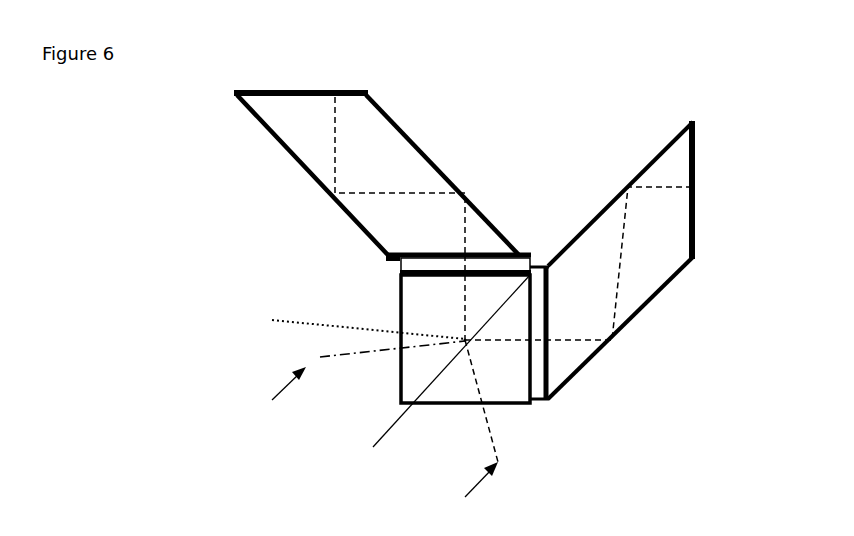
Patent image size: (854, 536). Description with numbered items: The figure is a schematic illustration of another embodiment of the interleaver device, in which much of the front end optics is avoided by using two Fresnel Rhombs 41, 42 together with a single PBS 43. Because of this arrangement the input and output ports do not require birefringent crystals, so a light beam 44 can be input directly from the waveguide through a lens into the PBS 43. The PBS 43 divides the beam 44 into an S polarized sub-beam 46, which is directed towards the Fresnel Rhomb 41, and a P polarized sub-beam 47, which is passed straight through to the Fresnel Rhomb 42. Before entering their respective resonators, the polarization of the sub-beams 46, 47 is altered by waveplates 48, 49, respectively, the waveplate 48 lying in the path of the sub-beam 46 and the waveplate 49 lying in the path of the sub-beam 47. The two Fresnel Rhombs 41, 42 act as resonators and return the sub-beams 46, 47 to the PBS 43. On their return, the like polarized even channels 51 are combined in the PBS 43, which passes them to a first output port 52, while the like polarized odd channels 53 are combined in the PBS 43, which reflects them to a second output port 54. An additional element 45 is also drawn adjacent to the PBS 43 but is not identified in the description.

The first wing panel 41 is at (303, 128).
The second wing panel 42 is at (660, 172).
The body 43 is at (439, 377).
The line of sight 44 is at (352, 325).
The upper plate 45 is at (465, 265).
The fold line of first wing 46 is at (432, 193).
The fold line of second wing 47 is at (627, 253).
The hinge 48 is at (549, 400).
The pivot point 49 is at (531, 273).
The rotation axis 51 is at (368, 358).
The direction of rotation 52 is at (279, 398).
The second axis 53 is at (500, 447).
The direction of rotation 54 is at (472, 495).